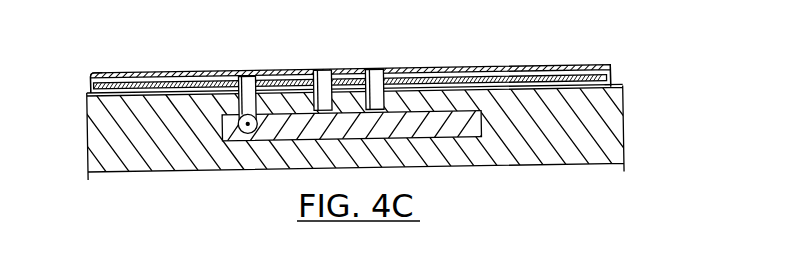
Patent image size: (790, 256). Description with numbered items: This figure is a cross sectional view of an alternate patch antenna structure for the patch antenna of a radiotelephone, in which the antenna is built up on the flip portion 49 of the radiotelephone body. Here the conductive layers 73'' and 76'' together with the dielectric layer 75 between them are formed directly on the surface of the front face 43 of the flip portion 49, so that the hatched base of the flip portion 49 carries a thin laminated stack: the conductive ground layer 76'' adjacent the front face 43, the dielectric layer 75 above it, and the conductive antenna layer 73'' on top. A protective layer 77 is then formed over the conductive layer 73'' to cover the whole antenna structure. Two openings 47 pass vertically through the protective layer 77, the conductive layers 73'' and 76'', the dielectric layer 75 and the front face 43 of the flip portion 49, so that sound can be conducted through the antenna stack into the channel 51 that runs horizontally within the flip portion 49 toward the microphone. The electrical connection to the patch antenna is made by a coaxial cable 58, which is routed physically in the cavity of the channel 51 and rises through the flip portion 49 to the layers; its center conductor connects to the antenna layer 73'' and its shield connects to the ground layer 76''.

The front face 43 is at (626, 80).
The openings 47 is at (327, 70).
The flip portion 49 is at (625, 124).
The channel 51 is at (463, 138).
The coaxial cable 58 is at (247, 134).
The conductive layer 73'' is at (70, 69).
The dielectric layer 75 is at (95, 87).
The conductive layer 76'' is at (324, 107).
The protective layer 77 is at (159, 72).